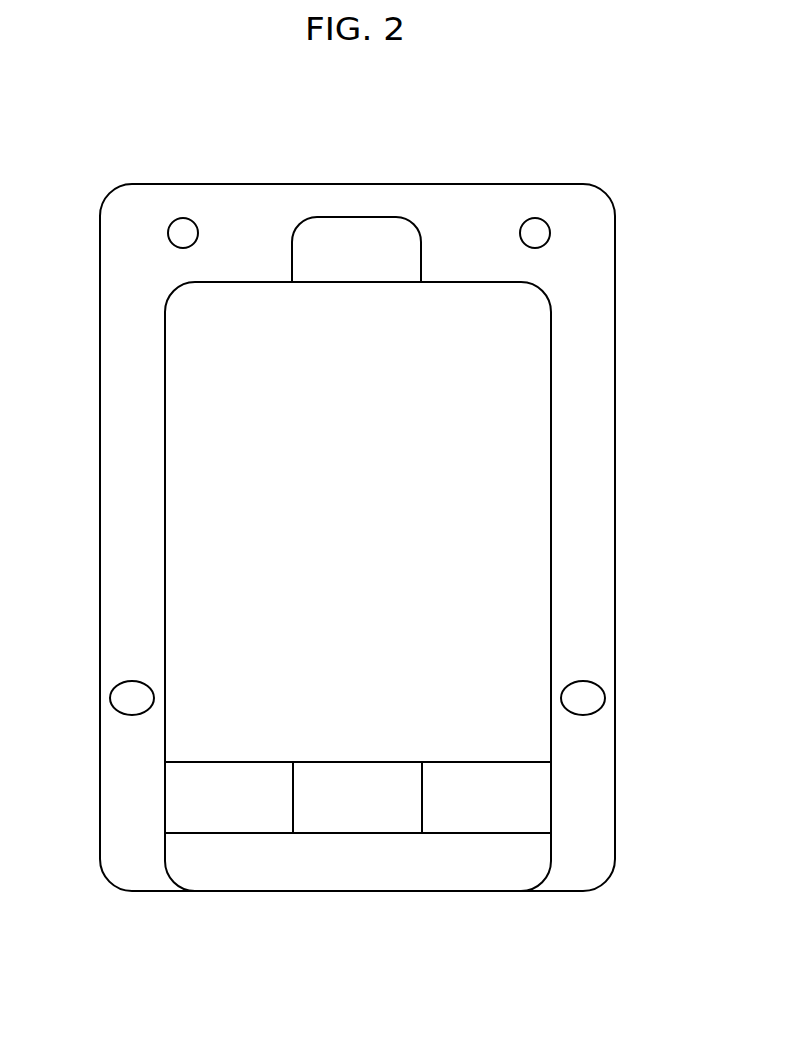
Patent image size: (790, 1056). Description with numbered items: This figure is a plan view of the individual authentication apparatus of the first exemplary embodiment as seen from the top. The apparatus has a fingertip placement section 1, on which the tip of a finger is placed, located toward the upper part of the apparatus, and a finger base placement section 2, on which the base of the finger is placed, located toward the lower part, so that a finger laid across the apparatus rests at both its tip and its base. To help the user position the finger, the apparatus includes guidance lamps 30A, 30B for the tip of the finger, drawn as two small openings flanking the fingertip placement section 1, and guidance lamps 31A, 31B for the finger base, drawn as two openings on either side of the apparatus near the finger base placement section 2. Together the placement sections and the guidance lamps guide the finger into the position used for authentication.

The fingertip placement section 1 is at (370, 247).
The finger base placement section 2 is at (357, 798).
The guidance lamp for a tip of a finger 30A is at (188, 218).
The guidance lamp for a tip of a finger 30B is at (537, 218).
The guidance lamp for a finger base 31A is at (110, 690).
The guidance lamp for a finger base 31B is at (607, 697).